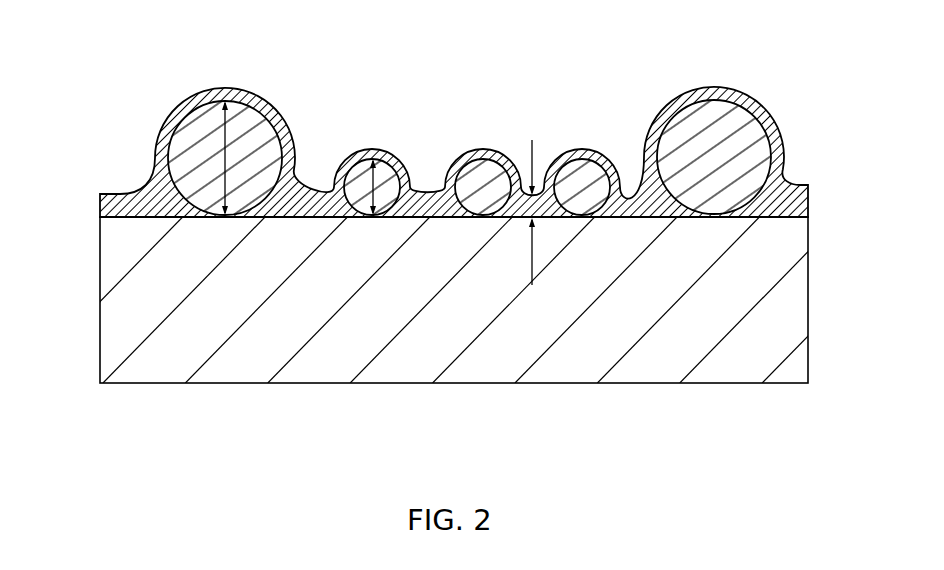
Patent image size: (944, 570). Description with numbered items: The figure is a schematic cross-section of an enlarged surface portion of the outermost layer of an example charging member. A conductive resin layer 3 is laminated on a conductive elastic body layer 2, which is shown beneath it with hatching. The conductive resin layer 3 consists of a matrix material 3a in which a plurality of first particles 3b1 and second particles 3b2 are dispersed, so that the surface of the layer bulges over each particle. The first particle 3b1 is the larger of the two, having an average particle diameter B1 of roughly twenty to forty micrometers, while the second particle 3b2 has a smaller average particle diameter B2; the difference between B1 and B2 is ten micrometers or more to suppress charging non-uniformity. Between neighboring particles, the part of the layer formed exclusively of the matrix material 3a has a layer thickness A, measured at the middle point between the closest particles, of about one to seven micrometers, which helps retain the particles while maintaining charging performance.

The conductive elastic body layer 2 is at (795, 329).
The conductive resin layer 3 is at (79, 75).
The matrix material 3a is at (146, 192).
The first particle 3b1 is at (263, 118).
The second particle 3b2 is at (352, 190).
The layer thickness A is at (531, 200).
The average particle diameter of the first particle B1 is at (244, 104).
The average particle diameter of the second particle B2 is at (384, 185).